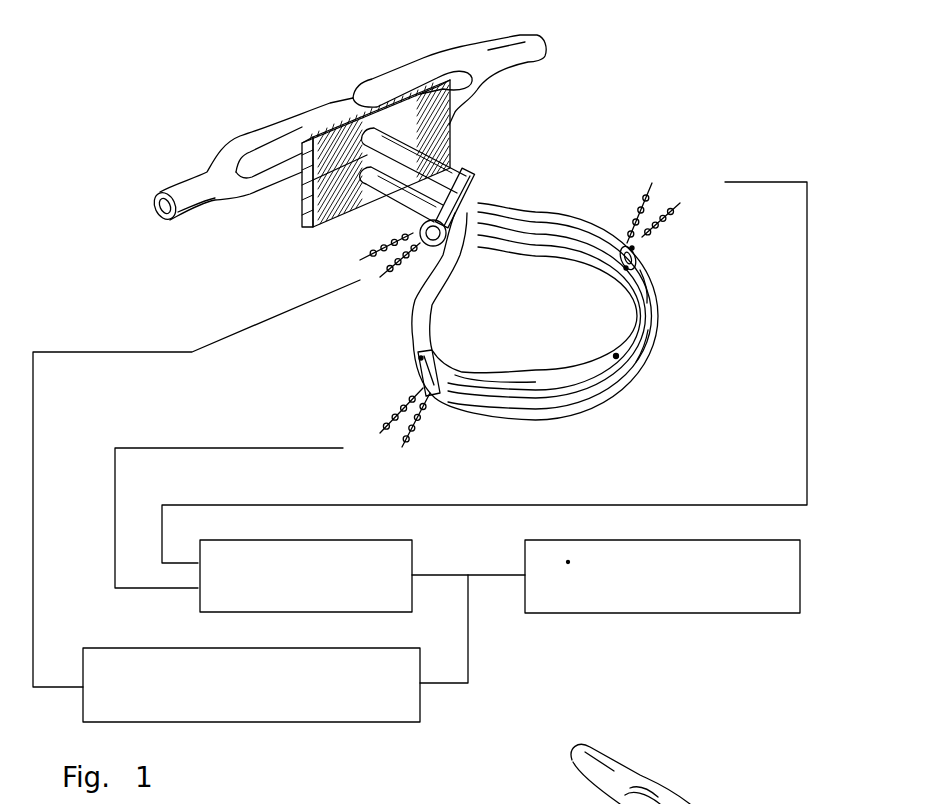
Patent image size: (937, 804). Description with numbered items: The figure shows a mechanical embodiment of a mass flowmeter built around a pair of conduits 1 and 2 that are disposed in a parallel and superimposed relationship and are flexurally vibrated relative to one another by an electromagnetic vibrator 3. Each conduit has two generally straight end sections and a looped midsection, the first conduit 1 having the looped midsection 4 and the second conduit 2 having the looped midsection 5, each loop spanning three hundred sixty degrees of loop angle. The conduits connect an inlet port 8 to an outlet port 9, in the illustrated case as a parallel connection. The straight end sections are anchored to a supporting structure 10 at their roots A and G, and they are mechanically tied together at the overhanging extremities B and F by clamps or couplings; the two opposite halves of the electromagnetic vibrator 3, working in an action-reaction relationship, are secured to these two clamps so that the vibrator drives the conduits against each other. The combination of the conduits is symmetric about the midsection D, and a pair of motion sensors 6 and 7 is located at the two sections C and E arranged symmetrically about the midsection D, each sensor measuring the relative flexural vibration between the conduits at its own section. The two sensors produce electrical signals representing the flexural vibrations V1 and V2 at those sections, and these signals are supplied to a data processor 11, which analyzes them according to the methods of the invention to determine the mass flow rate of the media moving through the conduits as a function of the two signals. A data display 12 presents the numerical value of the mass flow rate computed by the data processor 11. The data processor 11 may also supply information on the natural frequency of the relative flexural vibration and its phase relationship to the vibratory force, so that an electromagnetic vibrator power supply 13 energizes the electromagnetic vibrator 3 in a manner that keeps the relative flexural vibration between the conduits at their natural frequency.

The first conduit 1 is at (508, 385).
The second conduit 2 is at (570, 403).
The electromagnetic vibrator 3 is at (440, 268).
The looped midsection of first conduit 4 is at (645, 287).
The looped midsection of second conduit 5 is at (643, 347).
The motion sensor 6 is at (445, 395).
The motion sensor 7 is at (632, 263).
The inlet port 8 is at (162, 190).
The outlet port 9 is at (523, 33).
The supporting structure 10 is at (372, 127).
The data processor 11 is at (412, 553).
The data display 12 is at (598, 613).
The electromagnetic vibrator power supply 13 is at (387, 723).
The root of conduit end section A is at (302, 185).
The overhanging extremity B is at (420, 212).
The sensor section C is at (420, 355).
The midsection D is at (622, 353).
The sensor section E is at (647, 257).
The overhanging extremity F is at (462, 198).
The root of conduit end section G is at (447, 125).
The flexural vibration at first section V1 is at (392, 427).
The flexural vibration at second section V2 is at (672, 208).